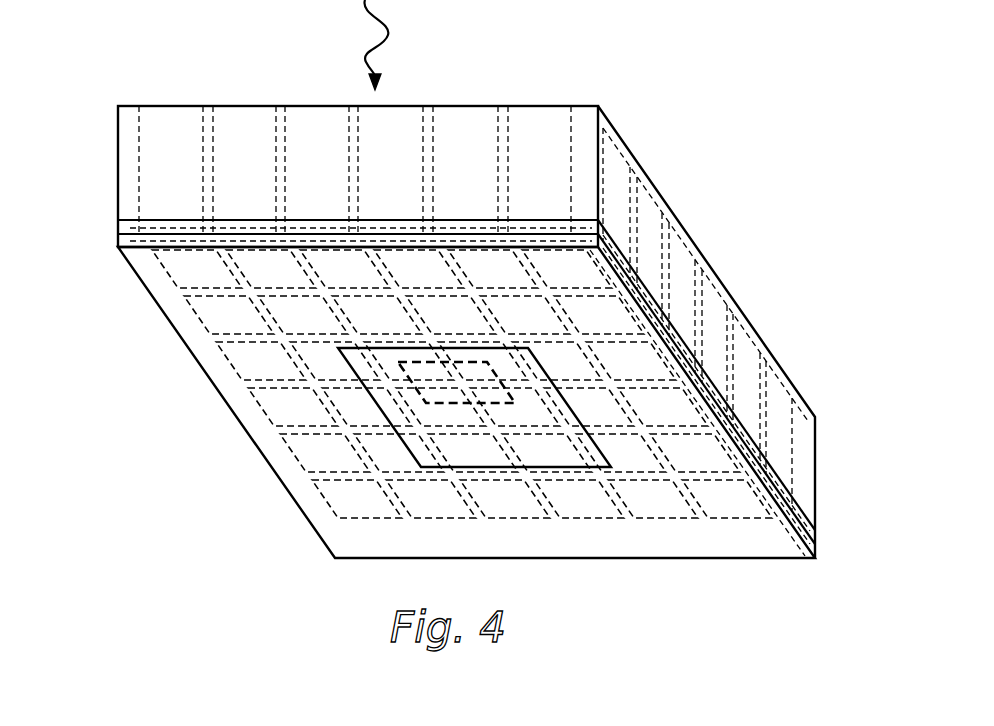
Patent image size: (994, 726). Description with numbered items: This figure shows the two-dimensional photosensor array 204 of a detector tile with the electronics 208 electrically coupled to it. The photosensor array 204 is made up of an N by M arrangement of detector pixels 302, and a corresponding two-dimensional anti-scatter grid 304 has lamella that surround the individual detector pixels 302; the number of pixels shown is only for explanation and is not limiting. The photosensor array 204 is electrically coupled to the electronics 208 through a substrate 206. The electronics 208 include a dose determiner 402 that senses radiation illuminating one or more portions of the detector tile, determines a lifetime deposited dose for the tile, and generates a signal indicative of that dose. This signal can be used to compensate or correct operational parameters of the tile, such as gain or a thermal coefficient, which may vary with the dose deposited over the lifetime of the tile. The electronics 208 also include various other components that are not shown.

The two-dimensional photosensor array 204 is at (125, 226).
The substrate 206 is at (136, 250).
The electronics 208 is at (383, 413).
The detector pixels 302 is at (543, 152).
The two-dimensional anti-scatter grid 304 is at (504, 126).
The dose determiner 402 is at (517, 403).